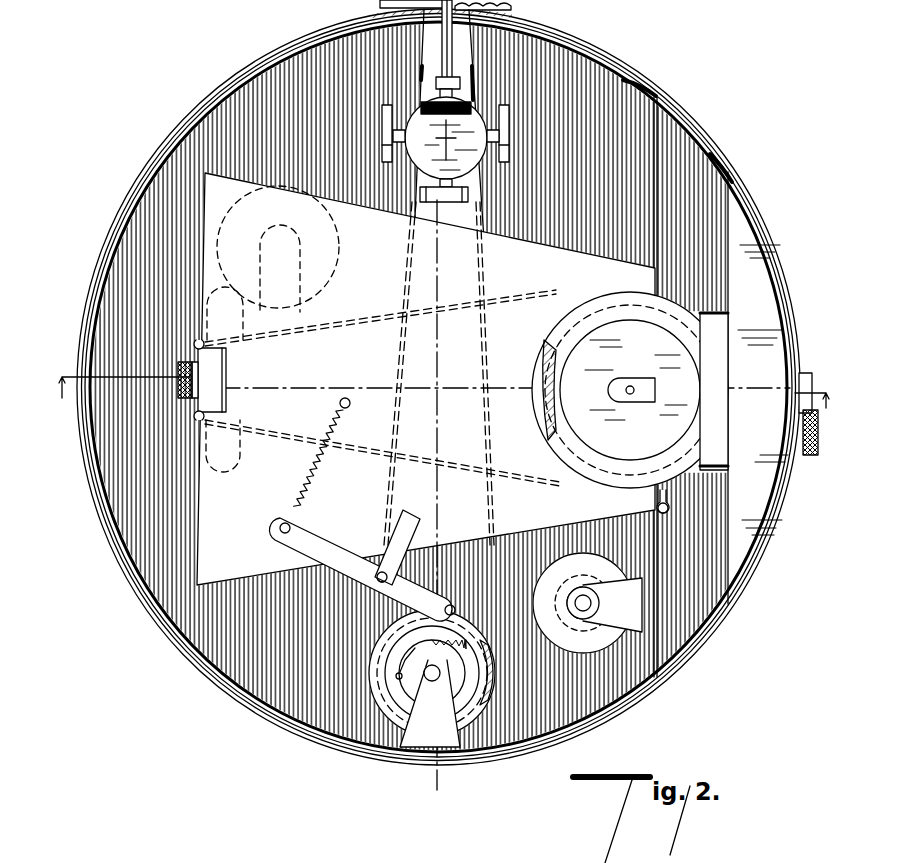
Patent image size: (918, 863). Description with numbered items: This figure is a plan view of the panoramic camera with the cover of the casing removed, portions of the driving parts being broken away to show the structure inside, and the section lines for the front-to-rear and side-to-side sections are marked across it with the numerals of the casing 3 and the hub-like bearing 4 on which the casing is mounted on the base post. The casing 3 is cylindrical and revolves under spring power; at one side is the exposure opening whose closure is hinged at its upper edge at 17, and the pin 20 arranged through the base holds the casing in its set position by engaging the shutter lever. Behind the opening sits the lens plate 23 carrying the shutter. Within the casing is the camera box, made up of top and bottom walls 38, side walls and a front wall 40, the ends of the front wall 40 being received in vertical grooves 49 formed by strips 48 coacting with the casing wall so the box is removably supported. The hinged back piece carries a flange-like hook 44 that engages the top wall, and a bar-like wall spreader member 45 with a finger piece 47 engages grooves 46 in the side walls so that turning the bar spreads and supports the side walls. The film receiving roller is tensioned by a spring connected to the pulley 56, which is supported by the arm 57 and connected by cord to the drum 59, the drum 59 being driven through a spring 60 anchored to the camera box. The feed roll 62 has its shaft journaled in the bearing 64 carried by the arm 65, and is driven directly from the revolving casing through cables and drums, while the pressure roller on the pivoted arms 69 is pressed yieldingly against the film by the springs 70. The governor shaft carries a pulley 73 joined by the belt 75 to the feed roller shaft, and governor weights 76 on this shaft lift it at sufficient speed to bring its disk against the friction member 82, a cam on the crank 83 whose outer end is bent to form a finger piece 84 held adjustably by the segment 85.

The casing 3 is at (348, 748).
The hub-like bearing 4 is at (441, 786).
The hinge 17 is at (806, 373).
The pin 20 is at (812, 456).
The lens plate 23 is at (735, 300).
The top and bottom walls 38 is at (212, 538).
The front wall 40 is at (660, 142).
The flange-like hook 44 is at (215, 392).
The wall spreader member 45 is at (200, 368).
The grooves 46 is at (198, 342).
The finger piece 47 is at (180, 386).
The vertical strips 48 is at (660, 95).
The vertical grooves 49 is at (668, 98).
The pulley 56 is at (583, 602).
The arm 57 is at (628, 612).
The drum 59 is at (718, 378).
The spring 60 is at (670, 504).
The feed roll 62 is at (482, 700).
The bearing 64 is at (348, 552).
The arm 65 is at (408, 718).
The pivoted arms 69 is at (410, 552).
The springs 70 is at (308, 494).
The pulley 73 is at (446, 138).
The belt 75 is at (410, 210).
The governor weights 76 is at (506, 134).
The friction member 82 is at (462, 84).
The shaft or crank 83 is at (452, 40).
The finger piece 84 is at (378, 9).
The segment 85 is at (513, 8).